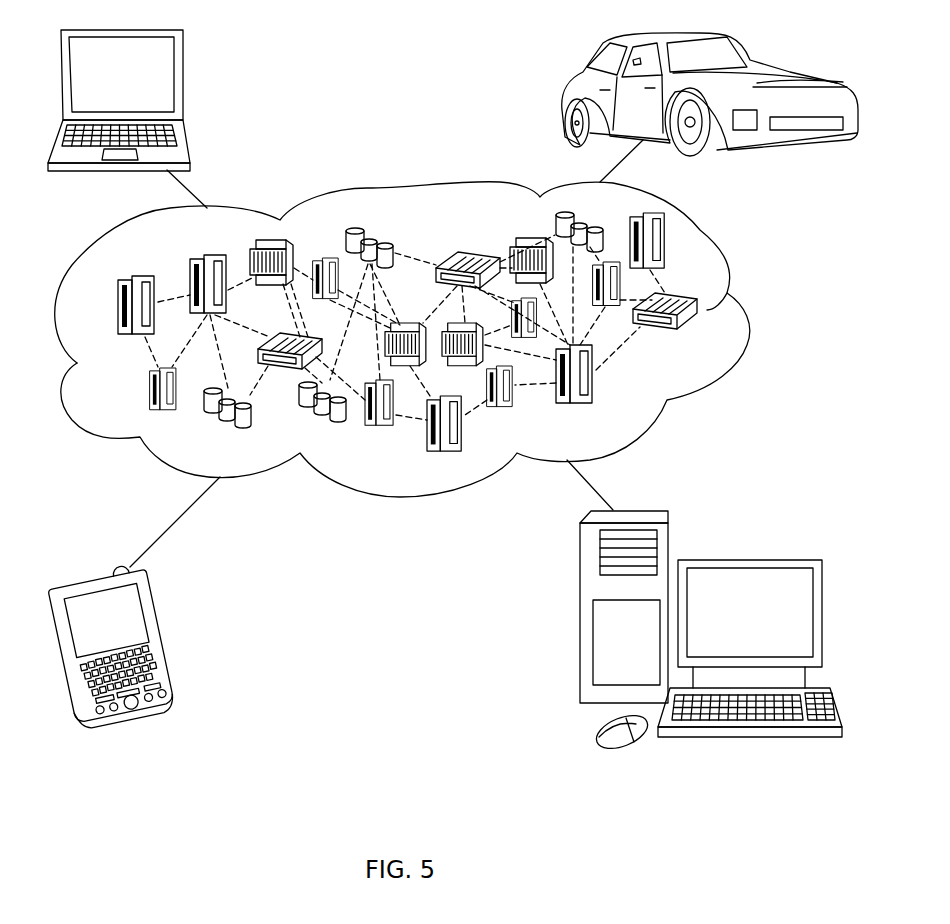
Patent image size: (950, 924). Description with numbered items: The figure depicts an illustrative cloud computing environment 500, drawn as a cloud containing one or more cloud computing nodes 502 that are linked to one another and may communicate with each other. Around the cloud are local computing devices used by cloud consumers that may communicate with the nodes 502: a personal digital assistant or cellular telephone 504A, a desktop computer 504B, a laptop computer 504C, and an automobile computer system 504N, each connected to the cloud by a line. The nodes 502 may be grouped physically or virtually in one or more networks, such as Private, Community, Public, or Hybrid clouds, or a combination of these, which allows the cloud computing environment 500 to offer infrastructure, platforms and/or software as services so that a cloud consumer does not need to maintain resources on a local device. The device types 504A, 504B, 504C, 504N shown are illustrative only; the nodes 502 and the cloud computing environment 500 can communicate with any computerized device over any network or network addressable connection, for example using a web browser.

The cloud computing environment 500 is at (727, 297).
The cloud computing nodes 502 is at (706, 341).
The personal digital assistant (PDA) or cellular telephone 504A is at (157, 610).
The desktop computer 504B is at (740, 557).
The laptop computer 504C is at (180, 63).
The automobile computer system 504N is at (566, 96).